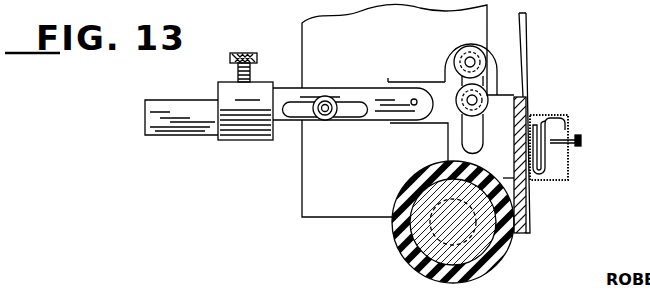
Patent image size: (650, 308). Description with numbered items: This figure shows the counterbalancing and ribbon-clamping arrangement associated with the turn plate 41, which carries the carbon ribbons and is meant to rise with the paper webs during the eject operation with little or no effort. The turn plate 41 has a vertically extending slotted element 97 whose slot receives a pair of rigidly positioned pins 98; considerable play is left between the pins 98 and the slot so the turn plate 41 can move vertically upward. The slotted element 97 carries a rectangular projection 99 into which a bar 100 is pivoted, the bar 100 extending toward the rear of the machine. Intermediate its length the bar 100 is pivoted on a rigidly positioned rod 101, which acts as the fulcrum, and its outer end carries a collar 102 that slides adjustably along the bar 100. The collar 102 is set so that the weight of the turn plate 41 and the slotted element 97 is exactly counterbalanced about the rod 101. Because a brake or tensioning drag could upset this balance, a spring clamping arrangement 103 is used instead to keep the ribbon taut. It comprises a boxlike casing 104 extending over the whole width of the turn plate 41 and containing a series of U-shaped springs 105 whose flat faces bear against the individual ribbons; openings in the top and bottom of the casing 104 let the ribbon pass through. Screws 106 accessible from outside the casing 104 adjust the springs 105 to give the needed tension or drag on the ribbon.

The turn plate 41 is at (456, 136).
The slotted element 97 is at (465, 46).
The pins 98 is at (480, 55).
The rectangular projection 99 is at (428, 86).
The bar 100 is at (168, 107).
The rod 101 is at (327, 120).
The collar 102 is at (238, 138).
The spring clamping arrangement 103 is at (538, 112).
The boxlike casing 104 is at (558, 181).
The U-shaped springs 105 is at (560, 126).
The screws 106 is at (566, 145).